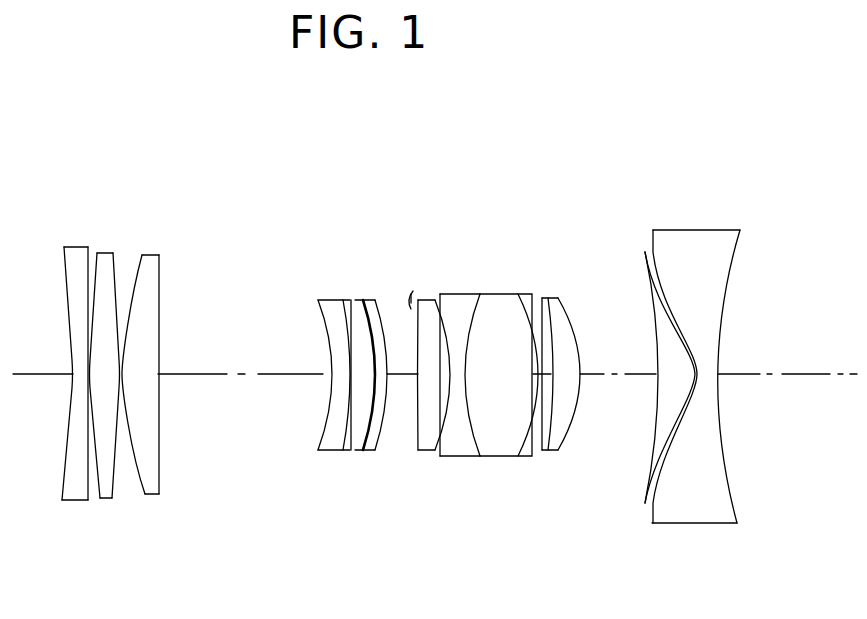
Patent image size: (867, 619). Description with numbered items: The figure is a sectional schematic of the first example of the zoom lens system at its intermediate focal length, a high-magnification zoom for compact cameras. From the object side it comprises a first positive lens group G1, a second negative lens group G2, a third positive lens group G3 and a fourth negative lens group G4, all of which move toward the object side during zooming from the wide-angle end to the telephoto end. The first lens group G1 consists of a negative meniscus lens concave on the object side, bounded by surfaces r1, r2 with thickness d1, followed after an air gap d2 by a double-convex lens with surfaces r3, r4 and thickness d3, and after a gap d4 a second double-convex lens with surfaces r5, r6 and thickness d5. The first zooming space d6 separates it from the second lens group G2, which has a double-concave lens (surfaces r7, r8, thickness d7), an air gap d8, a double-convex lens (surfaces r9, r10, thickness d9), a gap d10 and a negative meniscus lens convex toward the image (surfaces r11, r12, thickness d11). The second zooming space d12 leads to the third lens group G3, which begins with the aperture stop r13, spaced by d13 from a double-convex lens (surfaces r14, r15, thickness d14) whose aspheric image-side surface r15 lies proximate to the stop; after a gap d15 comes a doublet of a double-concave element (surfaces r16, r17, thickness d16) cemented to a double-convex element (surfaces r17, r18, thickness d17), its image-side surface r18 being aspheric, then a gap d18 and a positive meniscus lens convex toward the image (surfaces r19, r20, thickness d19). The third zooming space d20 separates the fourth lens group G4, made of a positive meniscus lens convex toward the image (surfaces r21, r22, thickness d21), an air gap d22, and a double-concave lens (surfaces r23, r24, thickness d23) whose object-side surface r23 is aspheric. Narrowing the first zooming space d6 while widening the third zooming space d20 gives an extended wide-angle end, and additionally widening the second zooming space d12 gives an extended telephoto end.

The first positive lens group G1 is at (162, 172).
The second negative lens group G2 is at (387, 175).
The third positive lens group G3 is at (565, 172).
The fourth negative lens group G4 is at (745, 172).
The radius of curvature of lens surface r1 is at (67, 272).
The radius of curvature of lens surface r2 is at (88, 267).
The radius of curvature of lens surface r3 is at (97, 270).
The radius of curvature of lens surface r4 is at (117, 270).
The radius of curvature of lens surface r5 is at (138, 272).
The radius of curvature of lens surface r6 is at (160, 277).
The radius of curvature of lens surface r7 is at (318, 320).
The radius of curvature of lens surface r8 is at (330, 330).
The radius of curvature of lens surface r9 is at (347, 335).
The radius of curvature of lens surface r10 is at (361, 330).
The radius of curvature of lens surface r11 is at (380, 330).
The radius of curvature of lens surface r12 is at (405, 285).
The aperture stop surface r13 is at (415, 292).
The radius of curvature of lens surface r14 is at (422, 296).
The radius of curvature of lens surface r15 is at (436, 302).
The radius of curvature of lens surface r16 is at (472, 298).
The radius of curvature of lens surface r17 is at (488, 293).
The radius of curvature of lens surface r18 is at (518, 300).
The radius of curvature of lens surface r19 is at (548, 300).
The radius of curvature of lens surface r20 is at (568, 300).
The radius of curvature of lens surface r21 is at (647, 290).
The radius of curvature of lens surface r22 is at (665, 277).
The radius of curvature of lens surface r23 is at (673, 280).
The radius of curvature of lens surface r24 is at (732, 262).
The separation between adjacent lens surfaces d1 is at (82, 374).
The separation between adjacent lens surfaces d2 is at (100, 378).
The separation between adjacent lens surfaces d3 is at (114, 400).
The separation between adjacent lens surfaces d4 is at (121, 400).
The separation between adjacent lens surfaces d5 is at (142, 374).
The first zooming space d6 is at (209, 392).
The separation between adjacent lens surfaces d7 is at (318, 428).
The separation between adjacent lens surfaces d8 is at (328, 448).
The separation between adjacent lens surfaces d9 is at (347, 448).
The separation between adjacent lens surfaces d10 is at (367, 450).
The separation between adjacent lens surfaces d11 is at (383, 448).
The second zooming space d12 is at (400, 380).
The separation between adjacent lens surfaces d13 is at (412, 450).
The separation between adjacent lens surfaces d14 is at (439, 375).
The separation between adjacent lens surfaces d15 is at (443, 455).
The separation between adjacent lens surfaces d16 is at (455, 458).
The separation between adjacent lens surfaces d17 is at (506, 375).
The separation between adjacent lens surfaces d18 is at (536, 456).
The separation between adjacent lens surfaces d19 is at (562, 456).
The third zooming space d20 is at (624, 396).
The separation between adjacent lens surfaces d21 is at (675, 376).
The separation between adjacent lens surfaces d22 is at (655, 470).
The separation between adjacent lens surfaces d23 is at (708, 380).